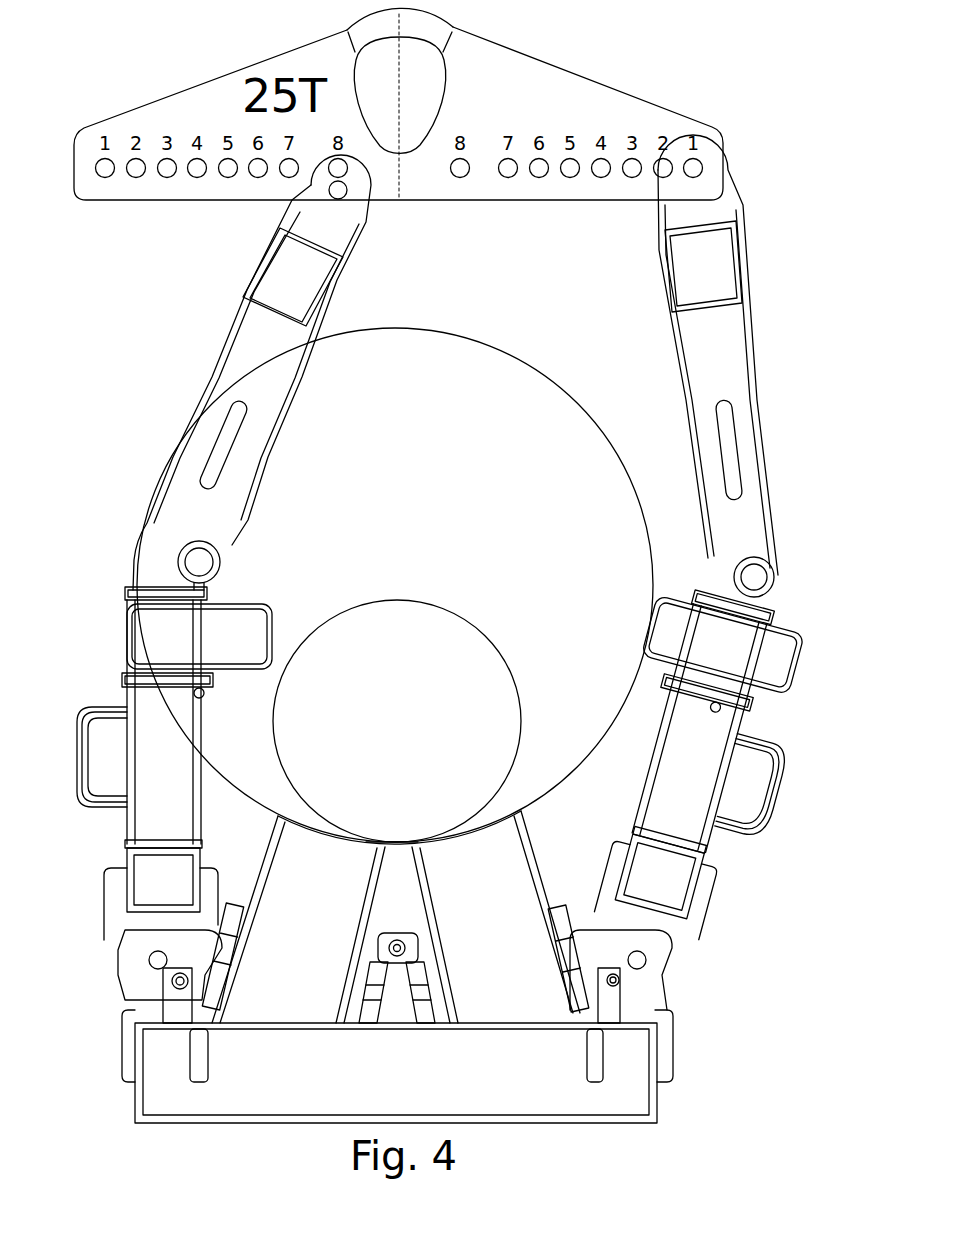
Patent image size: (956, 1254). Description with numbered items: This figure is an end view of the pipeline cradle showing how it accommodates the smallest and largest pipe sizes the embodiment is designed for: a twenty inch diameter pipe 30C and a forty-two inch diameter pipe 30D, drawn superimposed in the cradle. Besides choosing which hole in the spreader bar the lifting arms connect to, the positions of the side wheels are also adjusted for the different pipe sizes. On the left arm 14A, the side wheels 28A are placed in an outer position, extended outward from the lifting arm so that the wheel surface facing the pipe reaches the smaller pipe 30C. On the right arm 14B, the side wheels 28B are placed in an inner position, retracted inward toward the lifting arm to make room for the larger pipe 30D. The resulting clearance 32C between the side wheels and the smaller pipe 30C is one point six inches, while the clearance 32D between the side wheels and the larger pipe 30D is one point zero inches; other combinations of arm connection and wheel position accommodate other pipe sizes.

The left arm 14A is at (172, 529).
The right arm 14B is at (757, 495).
The side wheels 28A is at (138, 638).
The side wheels 28B is at (788, 672).
The pipe 30C is at (485, 632).
The pipe 30D is at (508, 355).
The clearance 32C is at (284, 655).
The clearance 32D is at (665, 596).